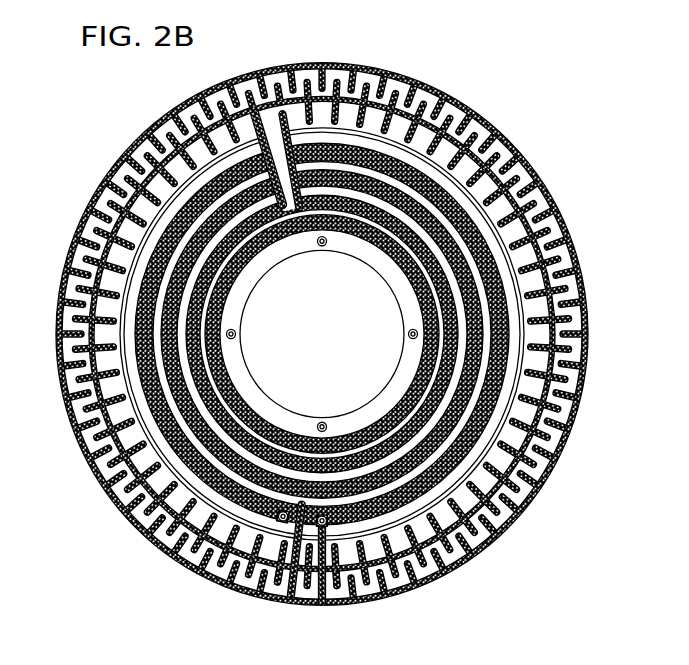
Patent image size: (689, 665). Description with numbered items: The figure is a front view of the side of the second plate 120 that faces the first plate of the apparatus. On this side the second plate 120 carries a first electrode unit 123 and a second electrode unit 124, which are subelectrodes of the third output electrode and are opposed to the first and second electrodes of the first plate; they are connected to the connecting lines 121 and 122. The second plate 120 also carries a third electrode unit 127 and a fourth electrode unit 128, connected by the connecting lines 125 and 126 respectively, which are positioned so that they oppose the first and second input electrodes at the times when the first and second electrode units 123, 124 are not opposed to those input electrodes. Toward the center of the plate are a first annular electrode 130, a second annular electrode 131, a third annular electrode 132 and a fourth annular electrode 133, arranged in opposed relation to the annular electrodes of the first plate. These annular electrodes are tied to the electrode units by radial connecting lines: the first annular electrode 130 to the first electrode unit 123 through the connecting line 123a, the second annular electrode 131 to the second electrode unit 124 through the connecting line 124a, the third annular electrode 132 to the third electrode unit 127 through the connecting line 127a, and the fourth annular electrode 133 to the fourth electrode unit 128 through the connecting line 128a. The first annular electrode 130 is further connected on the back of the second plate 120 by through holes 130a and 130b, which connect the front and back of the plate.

The second plate 120 is at (518, 170).
The connecting line 121 is at (466, 112).
The connecting line 122 is at (573, 313).
The first electrode unit 123 is at (495, 160).
The connecting line 123a is at (325, 592).
The second electrode unit 124 is at (560, 240).
The connecting line 124a is at (297, 572).
The connecting line 125 is at (548, 352).
The connecting line 126 is at (523, 397).
The third electrode unit 127 is at (531, 405).
The connecting line 127a is at (252, 136).
The fourth electrode unit 128 is at (516, 450).
The connecting line 128a is at (313, 226).
The first annular electrode 130 is at (160, 385).
The through hole 130a is at (284, 505).
The through hole 130b is at (333, 523).
The second annular electrode 131 is at (200, 395).
The third annular electrode 132 is at (200, 374).
The fourth annular electrode 133 is at (235, 306).